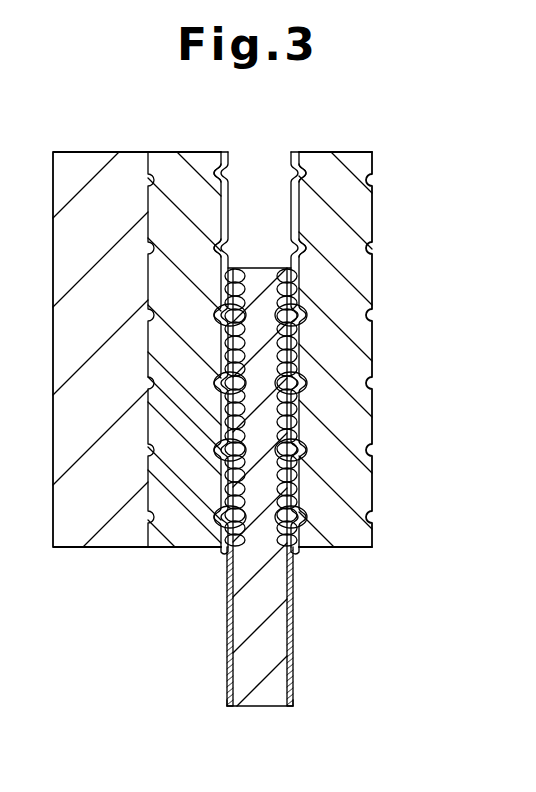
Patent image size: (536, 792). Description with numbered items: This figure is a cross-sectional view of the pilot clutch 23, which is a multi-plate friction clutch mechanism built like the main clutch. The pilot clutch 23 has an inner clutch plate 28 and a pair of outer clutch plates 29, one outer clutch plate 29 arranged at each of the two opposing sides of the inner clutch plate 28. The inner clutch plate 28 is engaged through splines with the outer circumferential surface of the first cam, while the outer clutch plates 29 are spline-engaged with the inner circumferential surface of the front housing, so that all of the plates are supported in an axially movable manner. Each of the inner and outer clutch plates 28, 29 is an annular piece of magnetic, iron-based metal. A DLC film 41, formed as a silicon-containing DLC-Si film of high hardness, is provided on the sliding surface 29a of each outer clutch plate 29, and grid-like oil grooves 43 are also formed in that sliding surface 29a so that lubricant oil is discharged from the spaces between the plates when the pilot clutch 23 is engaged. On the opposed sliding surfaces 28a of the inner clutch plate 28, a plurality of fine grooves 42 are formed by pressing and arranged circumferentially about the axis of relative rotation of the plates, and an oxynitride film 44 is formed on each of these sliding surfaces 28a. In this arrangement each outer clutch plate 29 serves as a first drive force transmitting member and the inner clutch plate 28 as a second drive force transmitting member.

The pilot clutch 23 is at (391, 160).
The inner clutch plate 28 is at (244, 627).
The sliding surface 28a is at (230, 673).
The outer clutch plate 29 is at (160, 162).
The sliding surface 29a is at (289, 190).
The DLC film 41 is at (226, 151).
The fine grooves 42 is at (222, 550).
The oil grooves 43 is at (296, 385).
The oxynitride film 44 is at (232, 708).